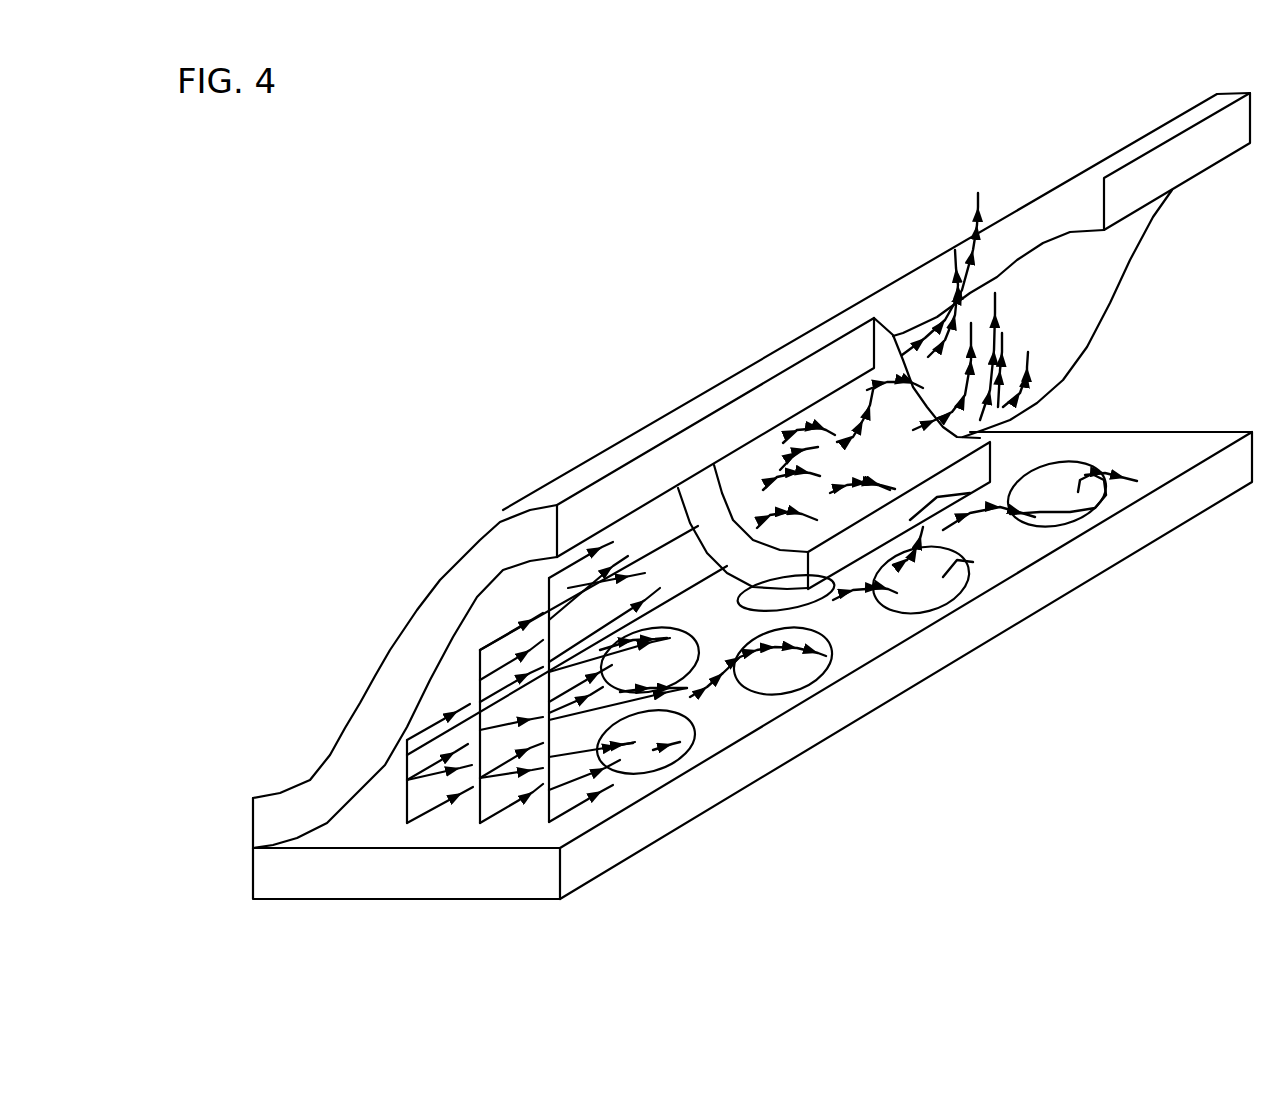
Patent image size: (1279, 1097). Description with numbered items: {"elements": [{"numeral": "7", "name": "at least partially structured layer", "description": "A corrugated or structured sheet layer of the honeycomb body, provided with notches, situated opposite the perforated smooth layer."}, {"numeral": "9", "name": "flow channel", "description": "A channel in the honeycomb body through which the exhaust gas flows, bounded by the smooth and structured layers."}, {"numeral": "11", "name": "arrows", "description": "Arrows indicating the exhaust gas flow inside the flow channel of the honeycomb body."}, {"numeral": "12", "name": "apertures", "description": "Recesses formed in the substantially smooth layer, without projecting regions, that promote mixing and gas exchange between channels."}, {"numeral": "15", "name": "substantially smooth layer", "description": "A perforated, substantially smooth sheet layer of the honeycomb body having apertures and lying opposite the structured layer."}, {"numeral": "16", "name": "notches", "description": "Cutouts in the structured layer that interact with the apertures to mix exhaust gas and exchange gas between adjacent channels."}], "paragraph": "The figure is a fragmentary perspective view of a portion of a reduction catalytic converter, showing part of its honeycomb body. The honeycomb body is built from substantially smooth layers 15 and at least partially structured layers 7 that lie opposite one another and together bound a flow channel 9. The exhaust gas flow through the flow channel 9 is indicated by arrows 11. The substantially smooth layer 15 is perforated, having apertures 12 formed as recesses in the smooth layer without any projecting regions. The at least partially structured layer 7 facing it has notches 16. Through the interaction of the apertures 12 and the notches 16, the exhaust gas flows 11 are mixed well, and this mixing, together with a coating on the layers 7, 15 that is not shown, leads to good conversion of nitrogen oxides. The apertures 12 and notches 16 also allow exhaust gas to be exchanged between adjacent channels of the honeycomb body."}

The upper curved guide plate 7 is at (751, 470).
The lower plate surface 9 is at (821, 699).
The flow guide fins / outlet 11 is at (826, 564).
The vortex flow 12 is at (863, 633).
The base plate 15 is at (752, 665).
The deflector 16 is at (897, 520).